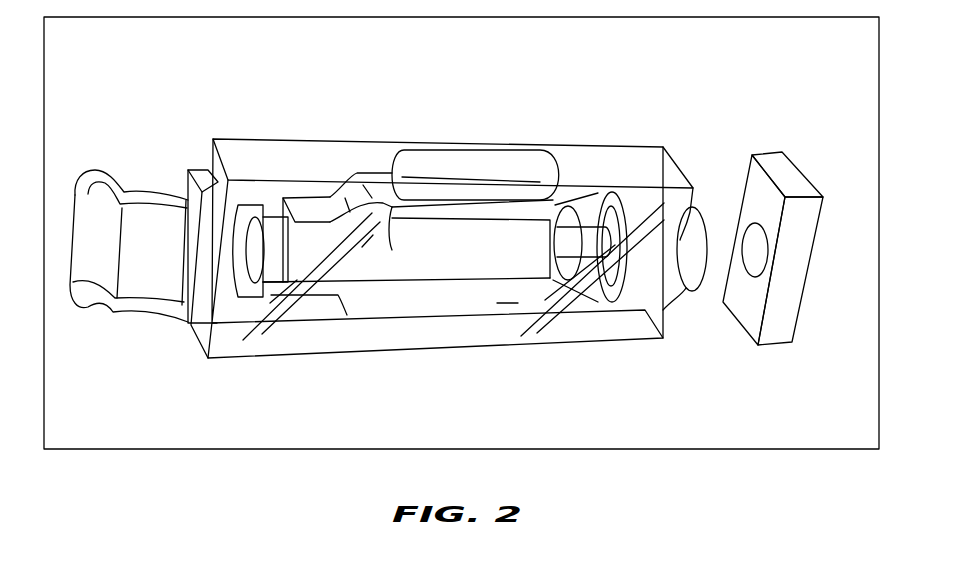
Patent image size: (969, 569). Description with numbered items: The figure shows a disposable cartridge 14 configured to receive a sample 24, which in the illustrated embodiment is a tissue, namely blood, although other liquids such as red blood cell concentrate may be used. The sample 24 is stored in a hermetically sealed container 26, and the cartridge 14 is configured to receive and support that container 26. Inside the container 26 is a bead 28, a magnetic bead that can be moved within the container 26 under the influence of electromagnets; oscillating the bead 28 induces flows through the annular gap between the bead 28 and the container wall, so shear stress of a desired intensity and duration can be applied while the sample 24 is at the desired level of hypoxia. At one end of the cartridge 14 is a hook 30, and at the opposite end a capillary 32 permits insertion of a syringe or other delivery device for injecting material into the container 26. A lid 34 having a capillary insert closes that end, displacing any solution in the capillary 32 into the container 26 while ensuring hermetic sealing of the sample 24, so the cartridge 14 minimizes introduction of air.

The cartridge 14 is at (266, 132).
The sample 24 is at (493, 255).
The hermetically sealed container 26 is at (460, 196).
The bead 28 is at (407, 262).
The hook 30 is at (103, 308).
The capillary 32 is at (660, 247).
The lid 34 is at (780, 205).